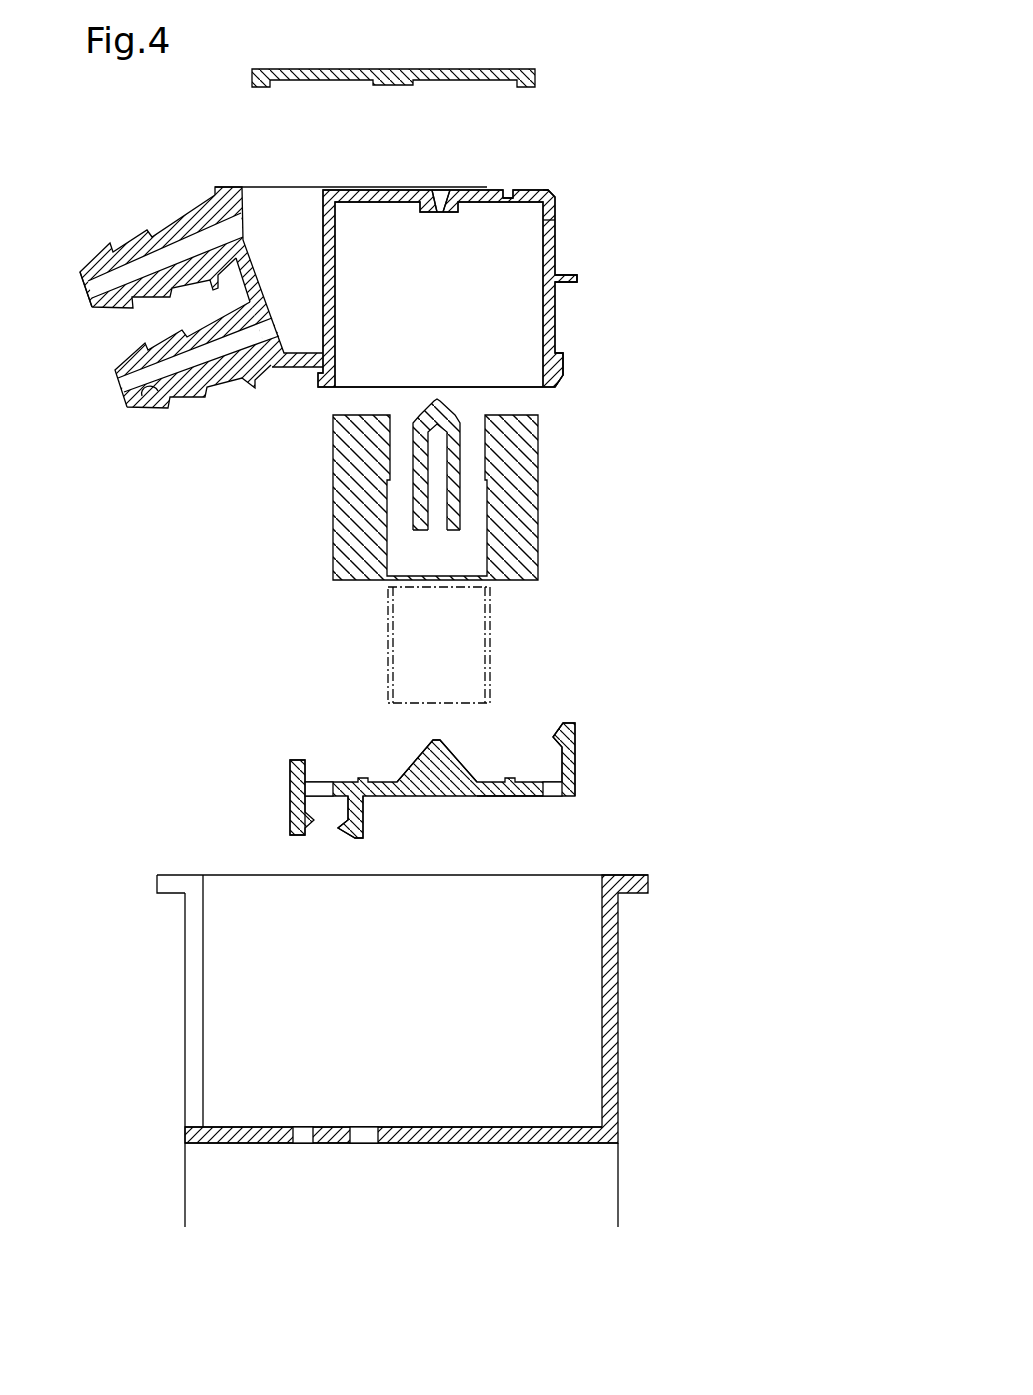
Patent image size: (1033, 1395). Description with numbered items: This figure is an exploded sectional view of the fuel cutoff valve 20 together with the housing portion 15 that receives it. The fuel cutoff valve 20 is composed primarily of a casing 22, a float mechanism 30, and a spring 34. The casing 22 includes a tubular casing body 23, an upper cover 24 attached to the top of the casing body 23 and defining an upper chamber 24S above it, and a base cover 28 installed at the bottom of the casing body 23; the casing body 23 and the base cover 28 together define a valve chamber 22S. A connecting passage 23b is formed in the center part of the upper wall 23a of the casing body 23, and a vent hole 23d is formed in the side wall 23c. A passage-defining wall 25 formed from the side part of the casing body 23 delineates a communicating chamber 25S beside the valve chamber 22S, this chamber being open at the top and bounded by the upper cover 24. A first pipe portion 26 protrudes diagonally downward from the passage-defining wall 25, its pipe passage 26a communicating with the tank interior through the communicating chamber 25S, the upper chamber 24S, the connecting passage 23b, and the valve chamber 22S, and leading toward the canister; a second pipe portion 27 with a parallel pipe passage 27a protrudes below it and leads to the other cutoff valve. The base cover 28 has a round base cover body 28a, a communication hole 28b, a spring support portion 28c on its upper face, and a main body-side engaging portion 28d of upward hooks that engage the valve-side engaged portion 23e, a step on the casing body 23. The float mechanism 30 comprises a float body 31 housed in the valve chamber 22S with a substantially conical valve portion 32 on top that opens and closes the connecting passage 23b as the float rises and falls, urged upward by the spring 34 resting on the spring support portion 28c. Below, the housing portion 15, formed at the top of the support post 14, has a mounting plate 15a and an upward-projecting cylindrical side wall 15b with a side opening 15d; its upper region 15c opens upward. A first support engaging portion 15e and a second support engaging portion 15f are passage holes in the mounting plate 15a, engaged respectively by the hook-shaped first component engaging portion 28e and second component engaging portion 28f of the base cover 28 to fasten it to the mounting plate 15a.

The fuel cutoff valve 20 is at (696, 127).
The casing 22 is at (705, 307).
The valve chamber 22S is at (448, 297).
The casing body 23 is at (655, 173).
The upper wall 23a is at (540, 190).
The connecting passage 23b is at (437, 191).
The side wall 23c is at (557, 252).
The vent hole 23d is at (545, 224).
The valve-side engaged portion 23e is at (560, 350).
The upper cover 24 is at (535, 76).
The upper chamber 24S is at (470, 188).
The passage-defining wall 25 is at (252, 262).
The communicating chamber 25S is at (312, 266).
The first pipe portion 26 is at (180, 219).
The pipe passage 26a is at (86, 268).
The second pipe portion 27 is at (222, 386).
The pipe passage 27a is at (149, 393).
The base cover 28 is at (575, 790).
The base cover body 28a is at (517, 797).
The communication hole 28b is at (550, 797).
The spring support portion 28c is at (477, 780).
The main body-side engaging portion 28d is at (575, 733).
The first component engaging portion 28e is at (363, 822).
The second component engaging portion 28f is at (290, 795).
The float mechanism 30 is at (753, 418).
The float body 31 is at (538, 480).
The valve portion 32 is at (445, 402).
The spring 34 is at (490, 637).
The housing portion 15 is at (753, 1035).
The mounting plate 15a is at (553, 1143).
The side wall 15b is at (618, 1050).
The recess upper flange 15c is at (225, 875).
The side opening 15d is at (185, 1010).
The first support engaging portion 15e is at (362, 1143).
The second support engaging portion 15f is at (297, 1143).
The support post 14 is at (618, 1190).